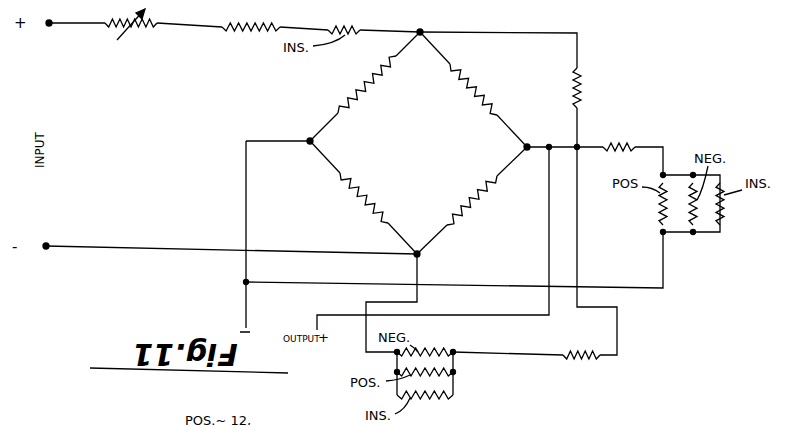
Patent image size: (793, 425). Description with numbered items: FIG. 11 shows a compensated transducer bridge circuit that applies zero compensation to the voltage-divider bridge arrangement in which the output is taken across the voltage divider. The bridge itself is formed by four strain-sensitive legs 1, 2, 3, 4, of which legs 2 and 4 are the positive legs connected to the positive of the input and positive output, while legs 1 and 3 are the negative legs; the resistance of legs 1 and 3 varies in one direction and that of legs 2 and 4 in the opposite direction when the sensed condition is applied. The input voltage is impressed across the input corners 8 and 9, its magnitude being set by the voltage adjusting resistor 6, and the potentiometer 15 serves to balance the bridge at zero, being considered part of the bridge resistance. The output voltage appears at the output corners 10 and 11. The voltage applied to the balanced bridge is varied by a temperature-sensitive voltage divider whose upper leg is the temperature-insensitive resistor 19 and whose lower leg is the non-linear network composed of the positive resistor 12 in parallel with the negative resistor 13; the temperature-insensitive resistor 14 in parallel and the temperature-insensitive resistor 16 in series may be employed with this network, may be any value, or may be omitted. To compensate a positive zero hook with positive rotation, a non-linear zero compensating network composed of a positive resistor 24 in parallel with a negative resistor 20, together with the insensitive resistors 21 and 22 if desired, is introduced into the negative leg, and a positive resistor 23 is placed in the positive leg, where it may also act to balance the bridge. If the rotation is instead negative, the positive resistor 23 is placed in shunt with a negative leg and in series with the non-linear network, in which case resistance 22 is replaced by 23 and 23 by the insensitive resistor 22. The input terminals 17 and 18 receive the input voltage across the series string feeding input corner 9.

The bridge leg 1 is at (357, 97).
The bridge leg 2 is at (470, 79).
The bridge leg 3 is at (458, 205).
The bridge leg 4 is at (366, 190).
The voltage adjusting resistor 6 is at (127, 18).
The input corner 8 is at (420, 256).
The input corner 9 is at (421, 31).
The output corner 10 is at (575, 146).
The output corner 11 is at (308, 140).
The positive resistor 12 is at (659, 208).
The negative resistor 13 is at (691, 232).
The temperature-insensitive resistor 14 is at (726, 212).
The potentiometer 15 is at (272, 26).
The temperature-insensitive resistor 16 is at (631, 128).
The positive input terminal 17 is at (49, 21).
The negative input terminal 18 is at (46, 249).
The temperature-insensitive resistor 19 is at (346, 30).
The negative resistor 20 is at (456, 374).
The insensitive resistor 21 is at (425, 398).
The insensitive resistor 22 is at (590, 360).
The positive resistor 23 is at (585, 88).
The positive resistor 24 is at (425, 352).